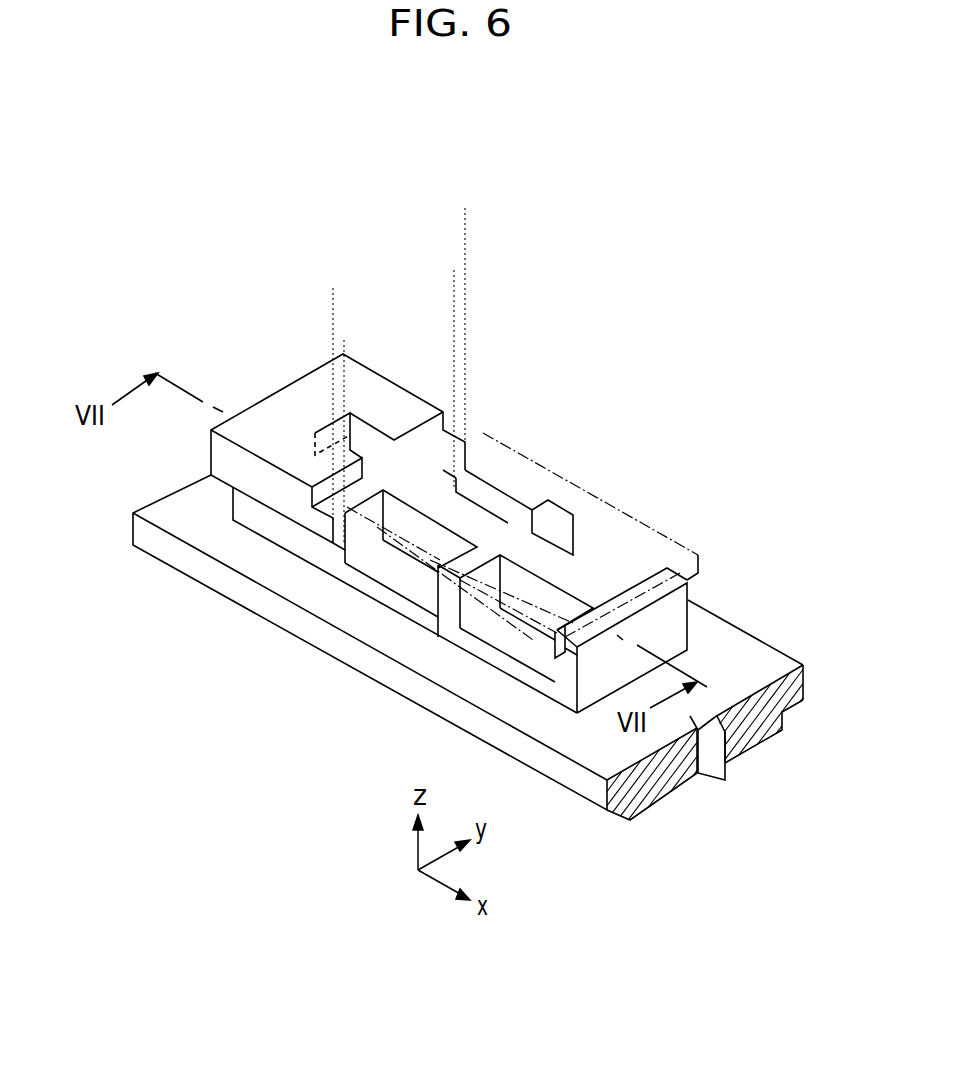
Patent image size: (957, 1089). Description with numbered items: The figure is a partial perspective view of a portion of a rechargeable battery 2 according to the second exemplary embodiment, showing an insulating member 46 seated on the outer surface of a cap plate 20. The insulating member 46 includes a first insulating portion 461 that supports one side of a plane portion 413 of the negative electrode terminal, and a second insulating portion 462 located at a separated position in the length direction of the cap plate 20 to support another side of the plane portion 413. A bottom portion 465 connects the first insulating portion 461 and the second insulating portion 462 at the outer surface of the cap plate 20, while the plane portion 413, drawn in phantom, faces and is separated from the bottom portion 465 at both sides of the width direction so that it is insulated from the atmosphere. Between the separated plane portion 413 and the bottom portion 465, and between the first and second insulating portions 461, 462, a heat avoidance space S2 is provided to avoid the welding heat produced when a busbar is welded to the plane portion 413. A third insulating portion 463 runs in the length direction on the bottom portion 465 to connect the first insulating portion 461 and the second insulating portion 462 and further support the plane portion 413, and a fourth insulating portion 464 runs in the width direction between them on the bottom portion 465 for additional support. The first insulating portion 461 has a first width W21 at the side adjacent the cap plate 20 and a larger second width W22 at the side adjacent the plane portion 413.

The rechargeable battery 2 is at (669, 348).
The cap plate 20 is at (198, 565).
The plane portion 413 is at (483, 430).
The insulating member 46 is at (304, 368).
The first insulating portion 461 is at (217, 453).
The second insulating portion 462 is at (662, 615).
The third insulating portion 463 is at (467, 515).
The fourth insulating portion 464 is at (550, 513).
The bottom portion 465 is at (358, 580).
The heat avoidance space S2 is at (528, 648).
The first width W21 is at (454, 285).
The second width W22 is at (465, 220).